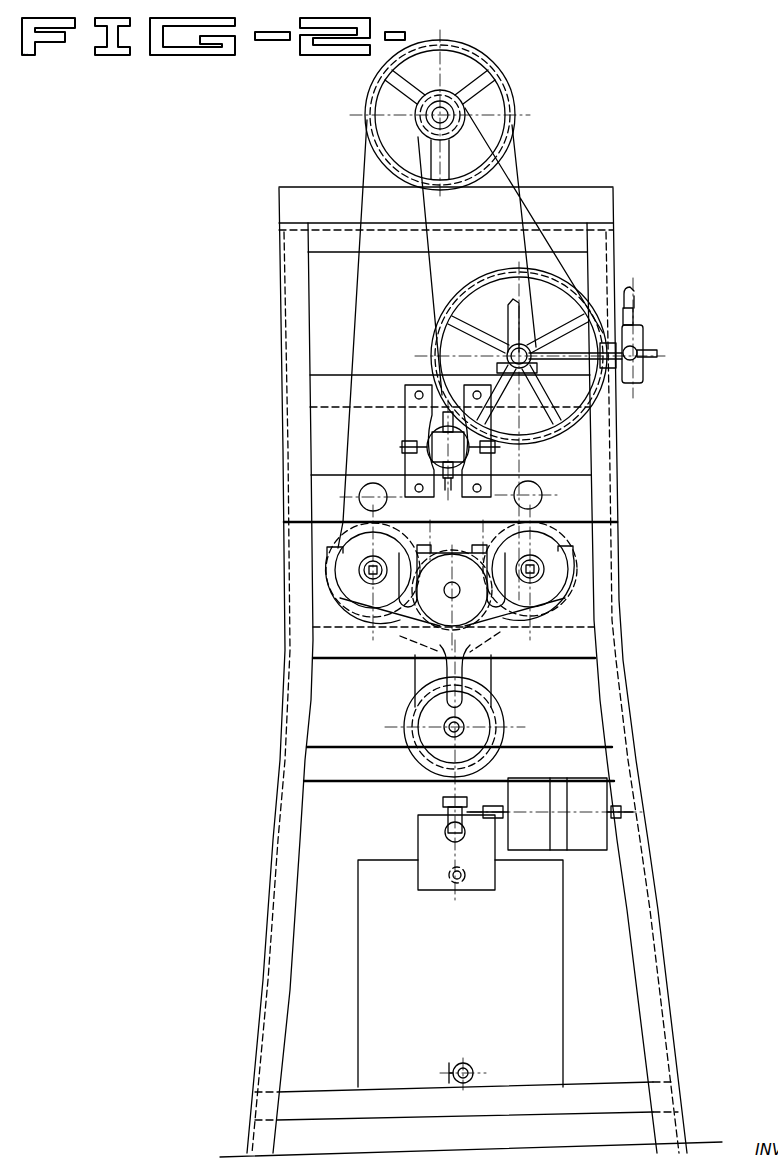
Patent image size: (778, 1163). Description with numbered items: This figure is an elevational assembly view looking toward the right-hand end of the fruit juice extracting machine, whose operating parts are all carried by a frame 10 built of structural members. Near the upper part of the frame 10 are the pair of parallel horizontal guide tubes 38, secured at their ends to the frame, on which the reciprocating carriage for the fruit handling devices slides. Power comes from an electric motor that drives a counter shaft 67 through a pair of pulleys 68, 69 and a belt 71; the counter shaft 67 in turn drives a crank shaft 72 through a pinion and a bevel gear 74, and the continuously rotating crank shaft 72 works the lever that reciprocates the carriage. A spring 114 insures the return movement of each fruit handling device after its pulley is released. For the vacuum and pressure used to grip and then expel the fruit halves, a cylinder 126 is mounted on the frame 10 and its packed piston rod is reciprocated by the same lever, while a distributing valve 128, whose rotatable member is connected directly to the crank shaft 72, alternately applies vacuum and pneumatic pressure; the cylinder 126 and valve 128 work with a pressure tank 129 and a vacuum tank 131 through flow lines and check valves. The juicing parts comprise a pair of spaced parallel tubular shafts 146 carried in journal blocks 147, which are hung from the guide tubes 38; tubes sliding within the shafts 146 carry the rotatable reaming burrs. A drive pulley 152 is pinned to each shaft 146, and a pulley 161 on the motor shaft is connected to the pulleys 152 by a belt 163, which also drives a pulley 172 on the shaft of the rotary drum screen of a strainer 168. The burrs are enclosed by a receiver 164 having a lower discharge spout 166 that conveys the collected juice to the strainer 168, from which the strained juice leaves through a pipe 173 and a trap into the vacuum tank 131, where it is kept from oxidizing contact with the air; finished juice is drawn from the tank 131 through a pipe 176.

The frame 10 is at (622, 503).
The guide tubes 38 is at (370, 491).
The counter shaft 67 is at (514, 350).
The pulley 68 is at (390, 102).
The pulley 69 is at (440, 321).
The belt 71 is at (422, 202).
The crank shaft 72 is at (562, 351).
The bevel gear 74 is at (507, 304).
The spring 114 is at (430, 827).
The cylinder 126 is at (432, 431).
The distributing valve 128 is at (642, 333).
The pressure tank 129 is at (593, 838).
The vacuum tank 131 is at (553, 958).
The tubular shafts 146 is at (362, 575).
The journal blocks 147 is at (346, 562).
The drive pulley 152 is at (343, 585).
The pulley 161 is at (487, 84).
The belt 163 is at (519, 153).
The receiver 164 is at (567, 607).
The discharge spout 166 is at (450, 664).
The strainer 168 is at (406, 707).
The pulley 172 is at (480, 735).
The pipe 173 is at (446, 806).
The pipe 176 is at (465, 1063).